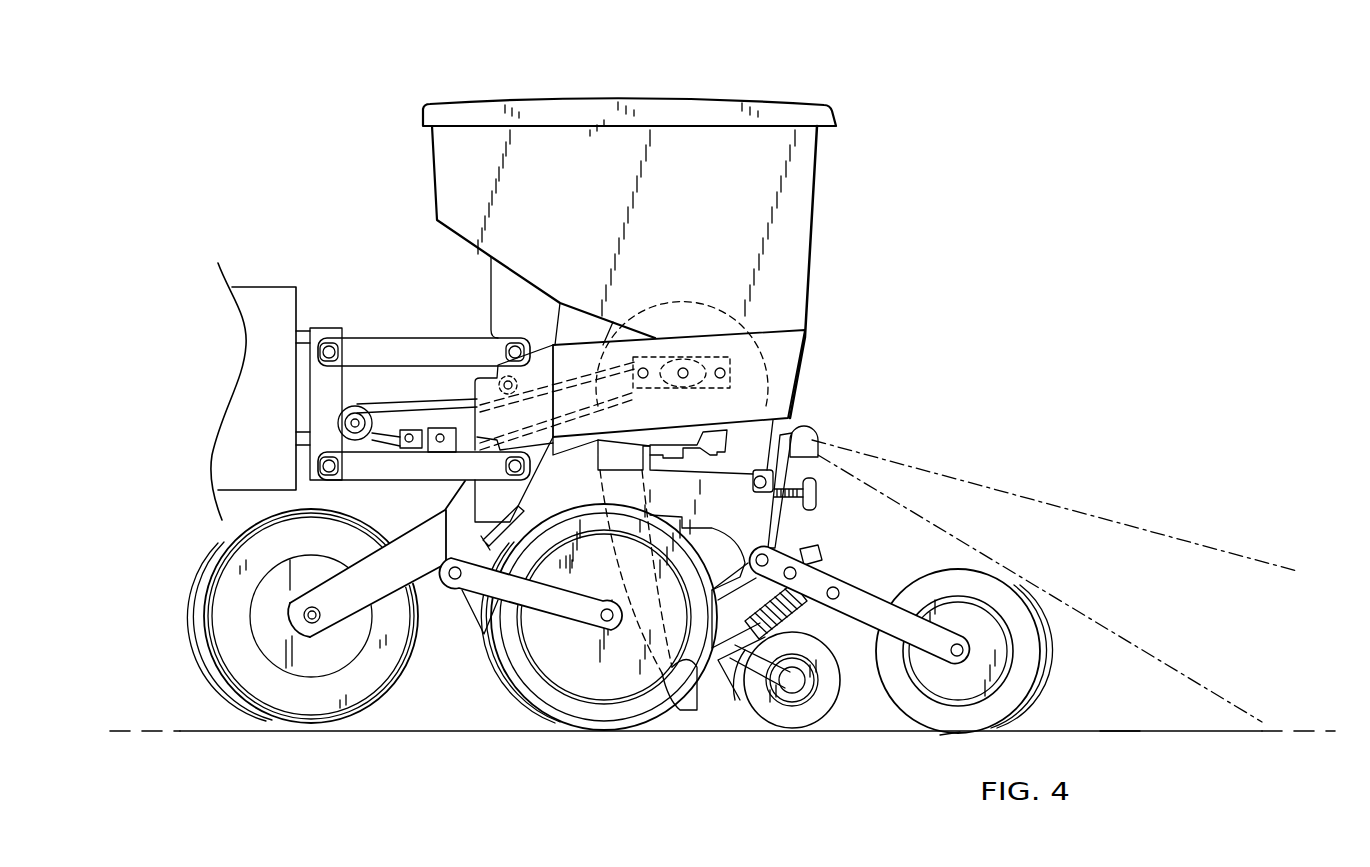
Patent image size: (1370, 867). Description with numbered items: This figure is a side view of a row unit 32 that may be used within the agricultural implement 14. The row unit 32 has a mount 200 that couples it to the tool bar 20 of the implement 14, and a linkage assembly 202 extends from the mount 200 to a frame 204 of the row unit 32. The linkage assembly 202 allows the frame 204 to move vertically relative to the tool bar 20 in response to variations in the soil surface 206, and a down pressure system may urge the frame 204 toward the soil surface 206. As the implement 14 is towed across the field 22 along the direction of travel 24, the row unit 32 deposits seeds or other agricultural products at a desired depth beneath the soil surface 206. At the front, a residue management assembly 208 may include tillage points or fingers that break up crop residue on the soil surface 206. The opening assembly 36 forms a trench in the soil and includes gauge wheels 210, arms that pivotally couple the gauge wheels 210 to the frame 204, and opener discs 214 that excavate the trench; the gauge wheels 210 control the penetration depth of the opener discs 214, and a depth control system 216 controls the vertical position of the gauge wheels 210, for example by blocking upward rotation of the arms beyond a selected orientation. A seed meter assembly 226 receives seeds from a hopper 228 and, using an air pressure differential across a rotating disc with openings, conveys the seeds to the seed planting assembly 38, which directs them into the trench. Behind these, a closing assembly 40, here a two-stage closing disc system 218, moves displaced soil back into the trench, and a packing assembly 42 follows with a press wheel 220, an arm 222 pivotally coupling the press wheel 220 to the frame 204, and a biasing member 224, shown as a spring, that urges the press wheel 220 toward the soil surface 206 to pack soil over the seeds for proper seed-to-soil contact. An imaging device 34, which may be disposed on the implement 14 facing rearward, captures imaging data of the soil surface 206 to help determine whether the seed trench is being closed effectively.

The agricultural implement 14 is at (922, 154).
The tool bar 20 is at (268, 287).
The field 22 is at (1171, 762).
The direction of travel 24 is at (110, 585).
The row unit 32 is at (448, 93).
The imaging device 34 is at (818, 440).
The opening assembly 36 is at (456, 677).
The seed planting assembly 38 is at (704, 705).
The closing assembly 40 is at (786, 736).
The packing assembly 42 is at (943, 738).
The mount 200 is at (318, 480).
The linkage assembly 202 is at (444, 336).
The frame 204 is at (778, 522).
The soil surface 206 is at (1192, 733).
The residue management assembly 208 is at (208, 695).
The gauge wheels 210 is at (650, 706).
The opener discs 214 is at (497, 650).
The depth control system 216 is at (819, 500).
The two-stage closing disc system 218 is at (830, 709).
The press wheel 220 is at (1018, 705).
The arm 222 is at (815, 605).
The biasing member 224 is at (840, 575).
The seed meter assembly 226 is at (766, 388).
The hopper 228 is at (795, 278).